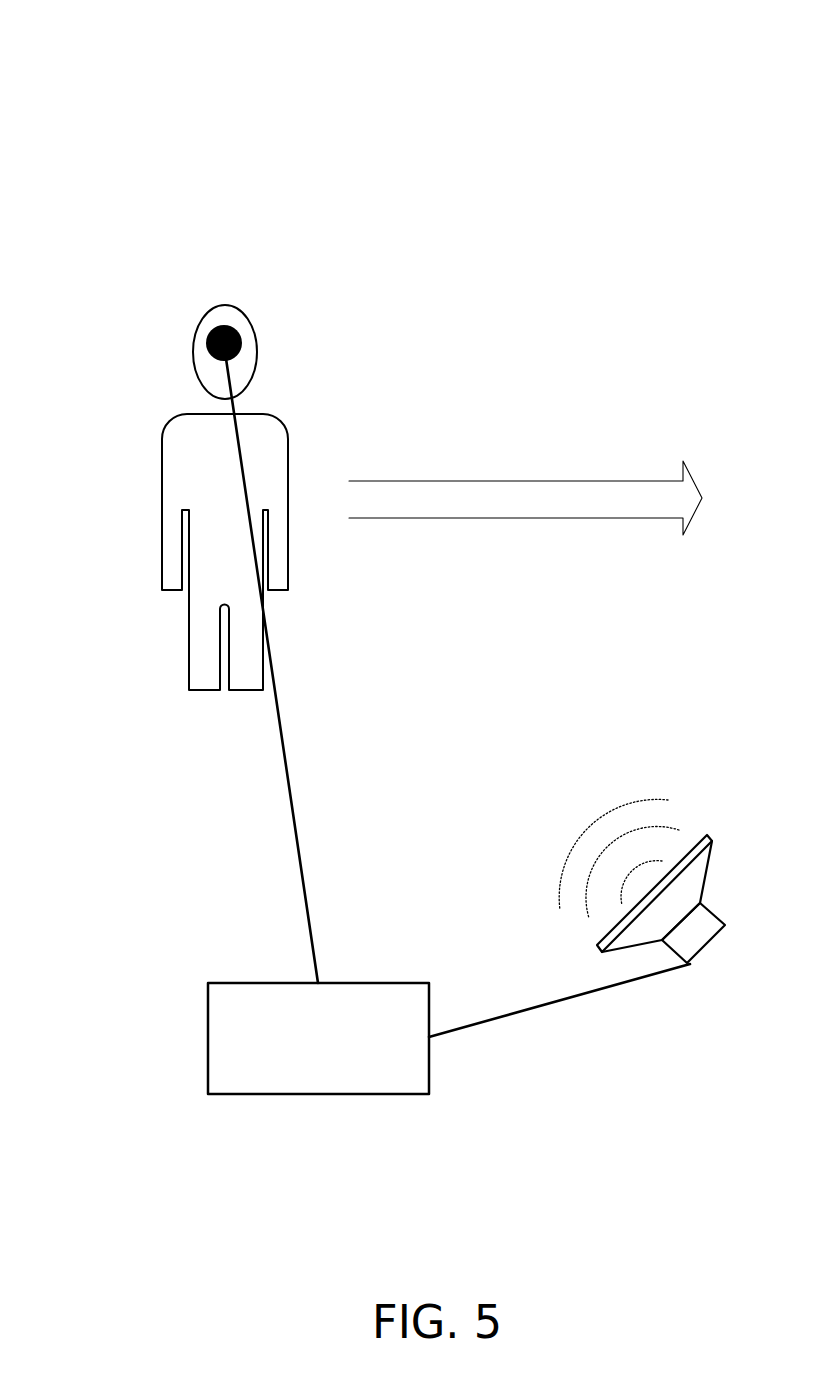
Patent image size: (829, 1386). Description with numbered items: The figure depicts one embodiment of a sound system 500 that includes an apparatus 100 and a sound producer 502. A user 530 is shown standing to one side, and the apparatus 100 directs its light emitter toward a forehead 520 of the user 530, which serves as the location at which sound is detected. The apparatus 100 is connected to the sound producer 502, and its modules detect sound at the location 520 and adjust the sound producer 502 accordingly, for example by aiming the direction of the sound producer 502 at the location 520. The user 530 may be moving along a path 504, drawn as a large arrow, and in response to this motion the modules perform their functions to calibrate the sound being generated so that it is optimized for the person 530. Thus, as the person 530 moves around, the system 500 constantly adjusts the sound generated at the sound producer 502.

The sound system 500 is at (113, 73).
The apparatus 100 is at (298, 1065).
The sound producer 502 is at (691, 967).
The path 504 is at (538, 518).
The forehead 520 is at (243, 353).
The user 530 is at (163, 513).